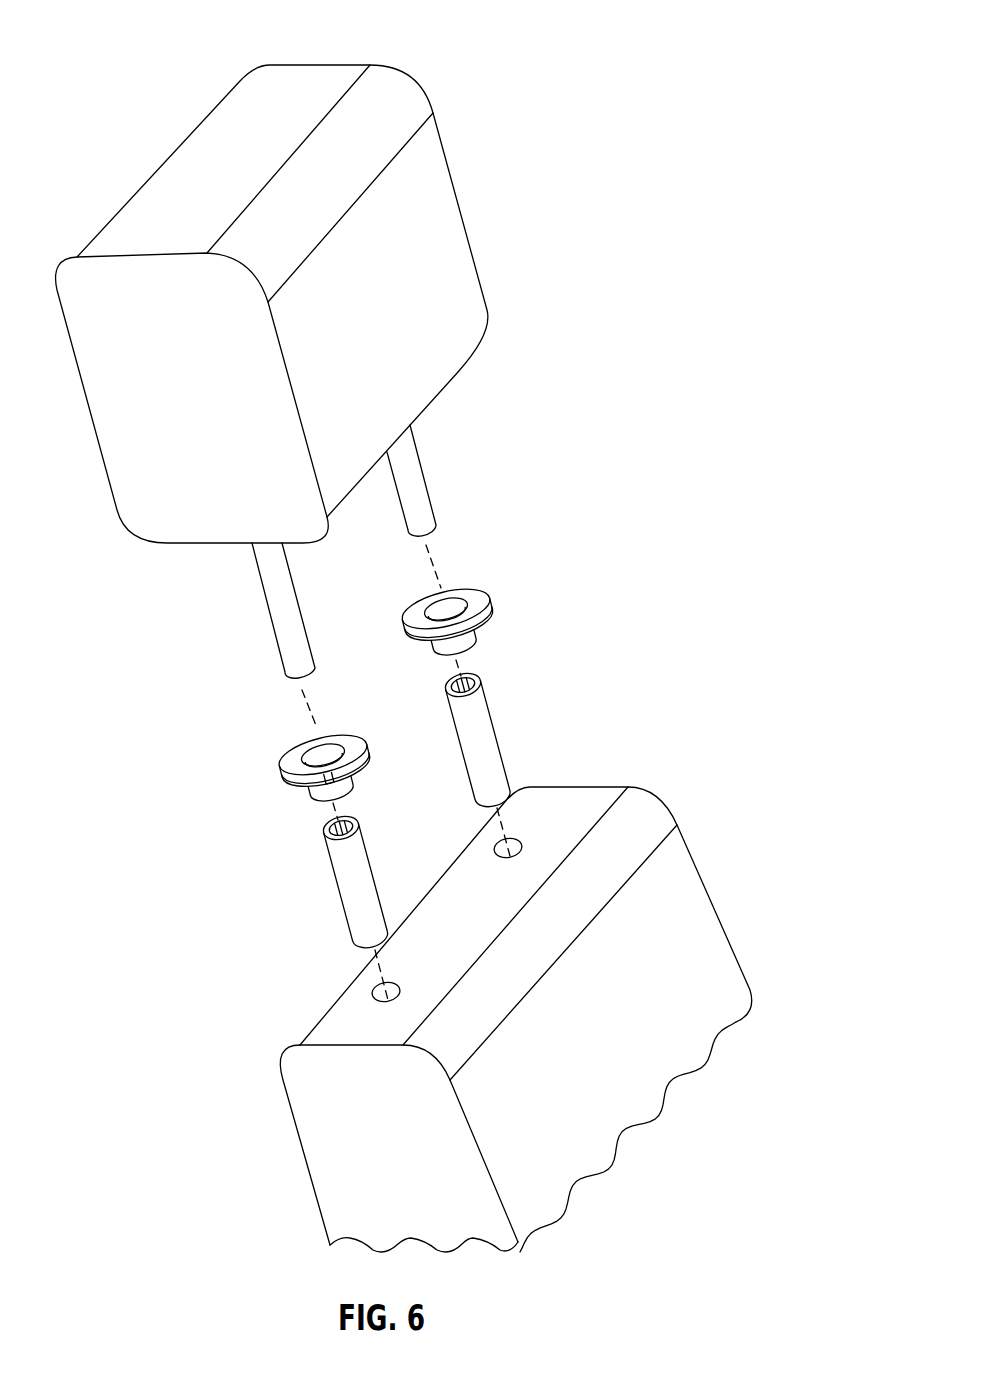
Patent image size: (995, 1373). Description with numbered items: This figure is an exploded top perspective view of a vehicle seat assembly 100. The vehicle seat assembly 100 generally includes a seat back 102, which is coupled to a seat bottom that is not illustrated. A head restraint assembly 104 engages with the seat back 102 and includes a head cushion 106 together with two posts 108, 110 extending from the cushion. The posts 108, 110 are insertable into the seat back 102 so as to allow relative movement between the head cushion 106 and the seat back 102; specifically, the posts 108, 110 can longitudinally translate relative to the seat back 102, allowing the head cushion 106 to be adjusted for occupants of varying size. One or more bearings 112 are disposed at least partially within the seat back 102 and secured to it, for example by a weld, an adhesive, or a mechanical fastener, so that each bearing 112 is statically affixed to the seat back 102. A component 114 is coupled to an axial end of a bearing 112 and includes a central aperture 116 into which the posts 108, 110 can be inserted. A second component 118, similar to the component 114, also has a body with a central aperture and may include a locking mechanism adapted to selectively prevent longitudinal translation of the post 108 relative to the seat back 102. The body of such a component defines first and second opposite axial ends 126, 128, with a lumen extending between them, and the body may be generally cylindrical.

The vehicle seat assembly 100 is at (493, 43).
The seat back 102 is at (703, 883).
The head restraint assembly 104 is at (172, 578).
The head cushion 106 is at (458, 203).
The post 108 is at (275, 641).
The post 110 is at (430, 502).
The bearing 112 is at (493, 723).
The component 114 is at (489, 604).
The central aperture 116 is at (460, 602).
The second component 118 is at (280, 773).
The first axial end 126 is at (482, 806).
The second axial end 128 is at (467, 676).